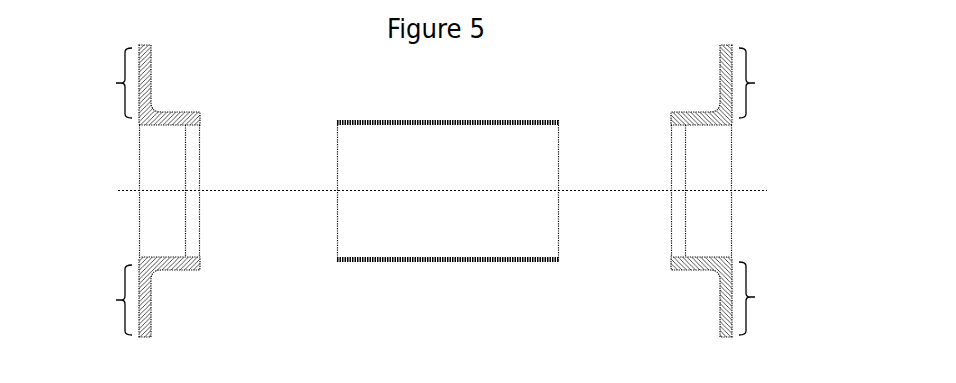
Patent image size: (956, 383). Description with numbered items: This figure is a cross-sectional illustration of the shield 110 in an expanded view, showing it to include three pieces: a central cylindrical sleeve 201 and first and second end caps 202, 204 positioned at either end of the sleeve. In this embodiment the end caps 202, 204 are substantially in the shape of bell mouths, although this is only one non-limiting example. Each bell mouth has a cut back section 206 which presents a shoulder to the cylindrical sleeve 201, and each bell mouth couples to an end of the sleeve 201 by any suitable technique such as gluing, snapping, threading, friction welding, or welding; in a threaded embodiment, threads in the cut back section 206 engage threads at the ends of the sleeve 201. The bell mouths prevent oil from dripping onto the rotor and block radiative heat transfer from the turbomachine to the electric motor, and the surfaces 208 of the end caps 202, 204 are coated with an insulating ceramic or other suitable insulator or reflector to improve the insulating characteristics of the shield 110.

The shield 110 is at (434, 213).
The cylindrical sleeve 201 is at (520, 121).
The first end cap 202 is at (170, 120).
The second end cap 204 is at (698, 118).
The cut back section 206 is at (193, 247).
The surfaces 208 is at (740, 328).